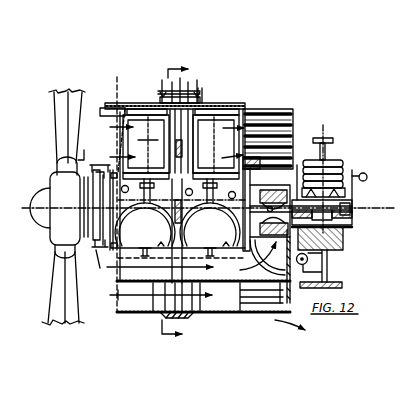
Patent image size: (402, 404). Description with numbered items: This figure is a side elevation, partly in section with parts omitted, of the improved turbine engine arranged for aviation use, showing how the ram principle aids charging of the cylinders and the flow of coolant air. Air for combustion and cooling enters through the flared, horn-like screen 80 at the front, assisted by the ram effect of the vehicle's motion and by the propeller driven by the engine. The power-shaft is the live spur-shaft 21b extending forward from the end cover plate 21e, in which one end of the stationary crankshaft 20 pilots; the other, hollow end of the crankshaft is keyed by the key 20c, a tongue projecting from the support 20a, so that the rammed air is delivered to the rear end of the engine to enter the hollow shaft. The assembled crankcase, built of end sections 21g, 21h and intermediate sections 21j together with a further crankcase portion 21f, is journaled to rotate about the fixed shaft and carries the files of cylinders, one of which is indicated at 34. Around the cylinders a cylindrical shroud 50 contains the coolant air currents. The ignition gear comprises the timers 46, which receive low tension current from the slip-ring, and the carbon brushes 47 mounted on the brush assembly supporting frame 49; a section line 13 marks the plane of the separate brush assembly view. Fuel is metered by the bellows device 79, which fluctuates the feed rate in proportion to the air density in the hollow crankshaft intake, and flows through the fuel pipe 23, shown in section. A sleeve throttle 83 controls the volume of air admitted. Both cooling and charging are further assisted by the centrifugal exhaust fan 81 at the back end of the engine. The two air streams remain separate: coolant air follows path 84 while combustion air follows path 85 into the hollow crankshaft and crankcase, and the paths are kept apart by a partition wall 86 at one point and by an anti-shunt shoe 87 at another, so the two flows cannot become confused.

The section line 13 is at (171, 205).
The stationary crankshaft 20 is at (349, 213).
The support 20a is at (340, 238).
The key 20c is at (332, 250).
The live spur-shaft 21b is at (82, 162).
The end cover plate 21e is at (98, 238).
The exhaust duct portion 21f is at (250, 243).
The end section 21g is at (131, 75).
The end section 21h is at (233, 192).
The intermediate section 21j is at (200, 92).
The fuel pipe 23 is at (301, 175).
The cylinder 34 is at (216, 144).
The timer 46 is at (148, 140).
The carbon brush 47 is at (188, 105).
The brush assembly supporting frame 49 is at (203, 92).
The cylindrical shroud 50 is at (228, 107).
The bellows device 79 is at (328, 157).
The screen 80 is at (117, 133).
The centrifugal exhaust fan 81 is at (261, 107).
The sleeve throttle 83 is at (355, 207).
The coolant air path 84 is at (171, 296).
The combustion air path 85 is at (170, 269).
The partition wall 86 is at (263, 258).
The anti-shunt shoe 87 is at (275, 182).